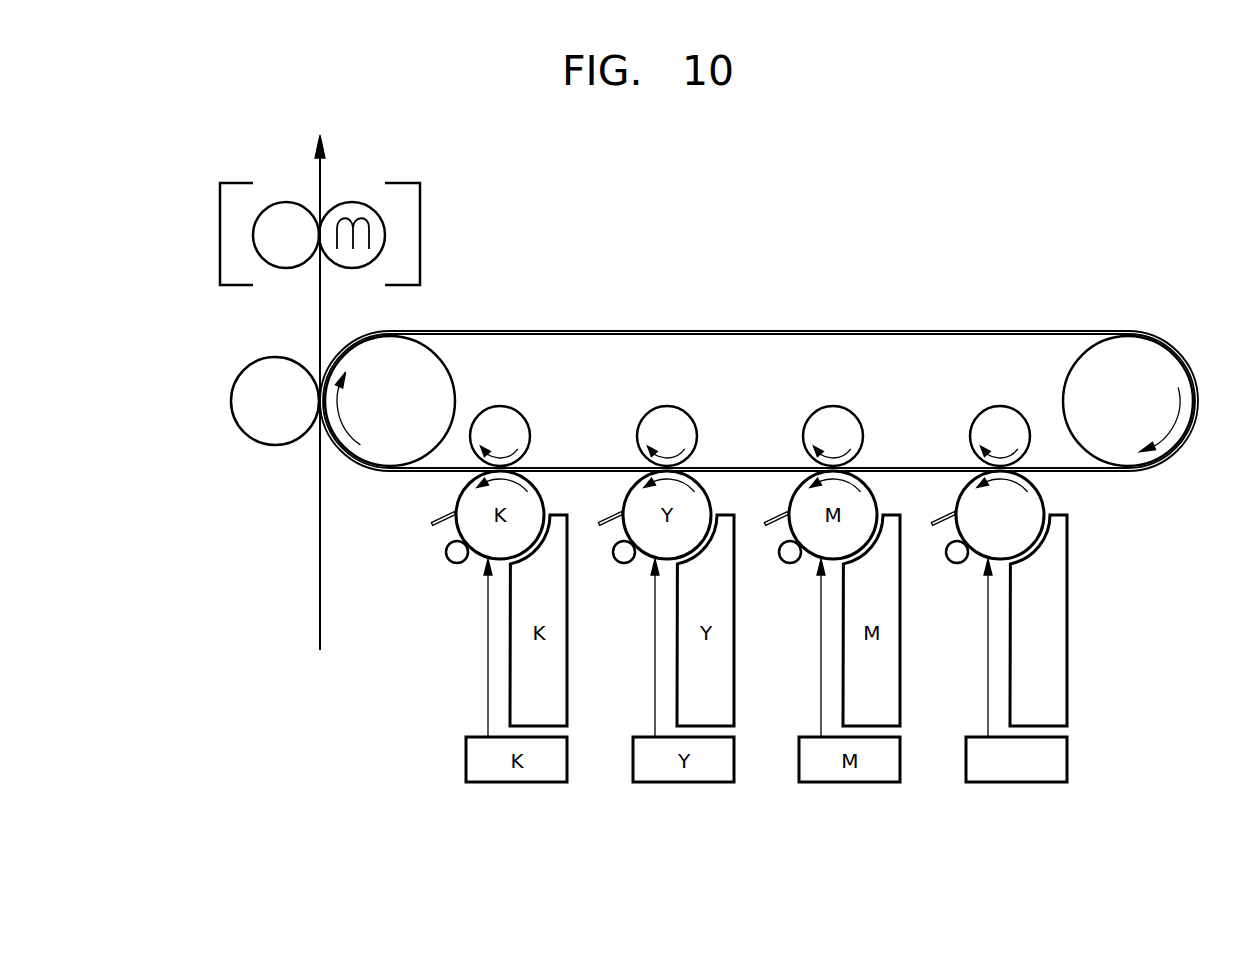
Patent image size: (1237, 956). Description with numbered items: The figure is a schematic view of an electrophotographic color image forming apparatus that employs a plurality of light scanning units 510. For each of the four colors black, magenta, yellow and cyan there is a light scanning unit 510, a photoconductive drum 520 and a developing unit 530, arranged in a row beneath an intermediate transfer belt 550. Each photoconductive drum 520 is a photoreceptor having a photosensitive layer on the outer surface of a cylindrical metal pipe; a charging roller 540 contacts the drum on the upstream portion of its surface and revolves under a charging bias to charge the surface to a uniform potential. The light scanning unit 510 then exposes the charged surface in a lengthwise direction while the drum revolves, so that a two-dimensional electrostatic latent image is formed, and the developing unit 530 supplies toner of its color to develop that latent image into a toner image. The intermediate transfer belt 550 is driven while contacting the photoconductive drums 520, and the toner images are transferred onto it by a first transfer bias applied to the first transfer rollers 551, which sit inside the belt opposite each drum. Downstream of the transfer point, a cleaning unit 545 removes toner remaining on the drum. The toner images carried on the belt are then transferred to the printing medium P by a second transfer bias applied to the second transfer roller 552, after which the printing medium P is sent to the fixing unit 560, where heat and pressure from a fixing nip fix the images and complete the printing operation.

The light scanning unit 510 is at (1059, 759).
The photoconductive drum 520 is at (1056, 515).
The developing unit 530 is at (1068, 626).
The charging roller 540 is at (952, 585).
The cleaning unit 545 is at (927, 462).
The intermediate transfer belt 550 is at (843, 331).
The first transfer roller 551 is at (1000, 368).
The second transfer roller 552 is at (246, 438).
The fixing unit 560 is at (422, 233).
The printing medium P is at (319, 323).